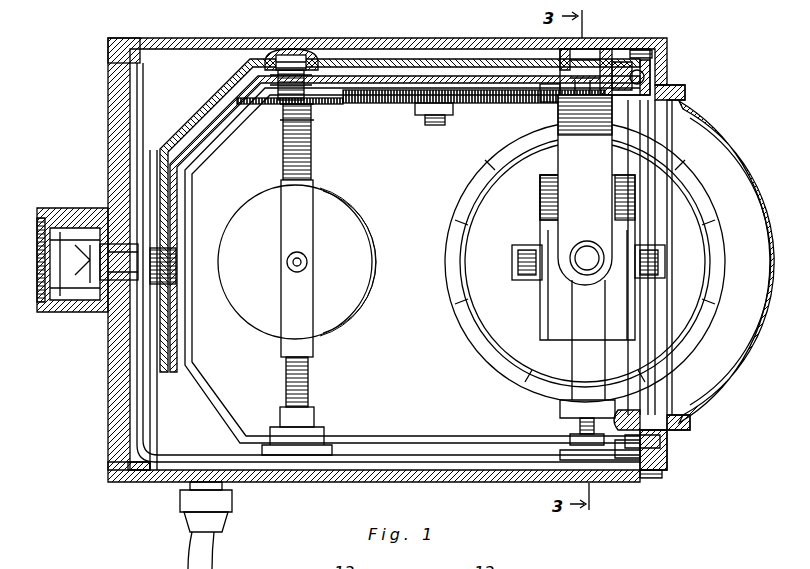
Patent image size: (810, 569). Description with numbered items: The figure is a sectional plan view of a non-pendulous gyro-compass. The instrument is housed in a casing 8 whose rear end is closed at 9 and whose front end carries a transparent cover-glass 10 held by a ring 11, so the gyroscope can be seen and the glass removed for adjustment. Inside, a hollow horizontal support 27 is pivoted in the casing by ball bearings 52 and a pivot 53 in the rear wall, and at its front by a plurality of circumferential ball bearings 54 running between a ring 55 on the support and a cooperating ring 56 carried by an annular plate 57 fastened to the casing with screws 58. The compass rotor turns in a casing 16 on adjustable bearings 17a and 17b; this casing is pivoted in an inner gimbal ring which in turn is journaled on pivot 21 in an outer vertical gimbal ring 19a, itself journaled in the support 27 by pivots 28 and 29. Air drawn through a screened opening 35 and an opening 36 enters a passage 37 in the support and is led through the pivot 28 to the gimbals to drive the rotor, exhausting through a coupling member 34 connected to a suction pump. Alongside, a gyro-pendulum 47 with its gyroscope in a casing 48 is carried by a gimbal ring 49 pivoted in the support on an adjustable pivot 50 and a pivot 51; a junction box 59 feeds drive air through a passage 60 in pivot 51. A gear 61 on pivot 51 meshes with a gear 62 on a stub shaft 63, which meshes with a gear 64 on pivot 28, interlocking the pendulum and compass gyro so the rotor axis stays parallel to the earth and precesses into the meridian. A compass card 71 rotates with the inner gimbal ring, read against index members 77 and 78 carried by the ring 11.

The casing 8 is at (130, 482).
The closed end 9 is at (112, 432).
The transparent cover-glass 10 is at (728, 148).
The ring 11 is at (672, 90).
The casing 16 is at (545, 312).
The adjustable bearing 17a is at (520, 258).
The adjustable bearing 17b is at (652, 262).
The vertical gimbal ring 19a is at (548, 205).
The pivot 21 is at (587, 270).
The horizontal support 27 is at (215, 108).
The pivot 28 is at (600, 62).
The pivot 29 is at (578, 426).
The coupling member 34 is at (190, 525).
The screened opening 35 is at (44, 262).
The opening 36 is at (95, 312).
The passage 37 is at (200, 95).
The gyro-pendulum 47 is at (338, 262).
The casing 48 is at (370, 230).
The gimbal ring 49 is at (310, 342).
The pivot 50 is at (312, 382).
The pivot 51 is at (275, 92).
The ball bearings 52 is at (105, 244).
The pivot 53 is at (172, 250).
The ball bearings 54 is at (640, 450).
The ring 55 is at (632, 455).
The ring 56 is at (650, 72).
The annular plate 57 is at (670, 445).
The screws 58 is at (660, 54).
The junction box 59 is at (310, 55).
The passage 60 is at (285, 140).
The gear 61 is at (330, 104).
The gear 62 is at (388, 103).
The stub shaft 63 is at (448, 120).
The gear 64 is at (548, 102).
The compass card 71 is at (462, 288).
The index member 77 is at (675, 385).
The index member 78 is at (690, 128).